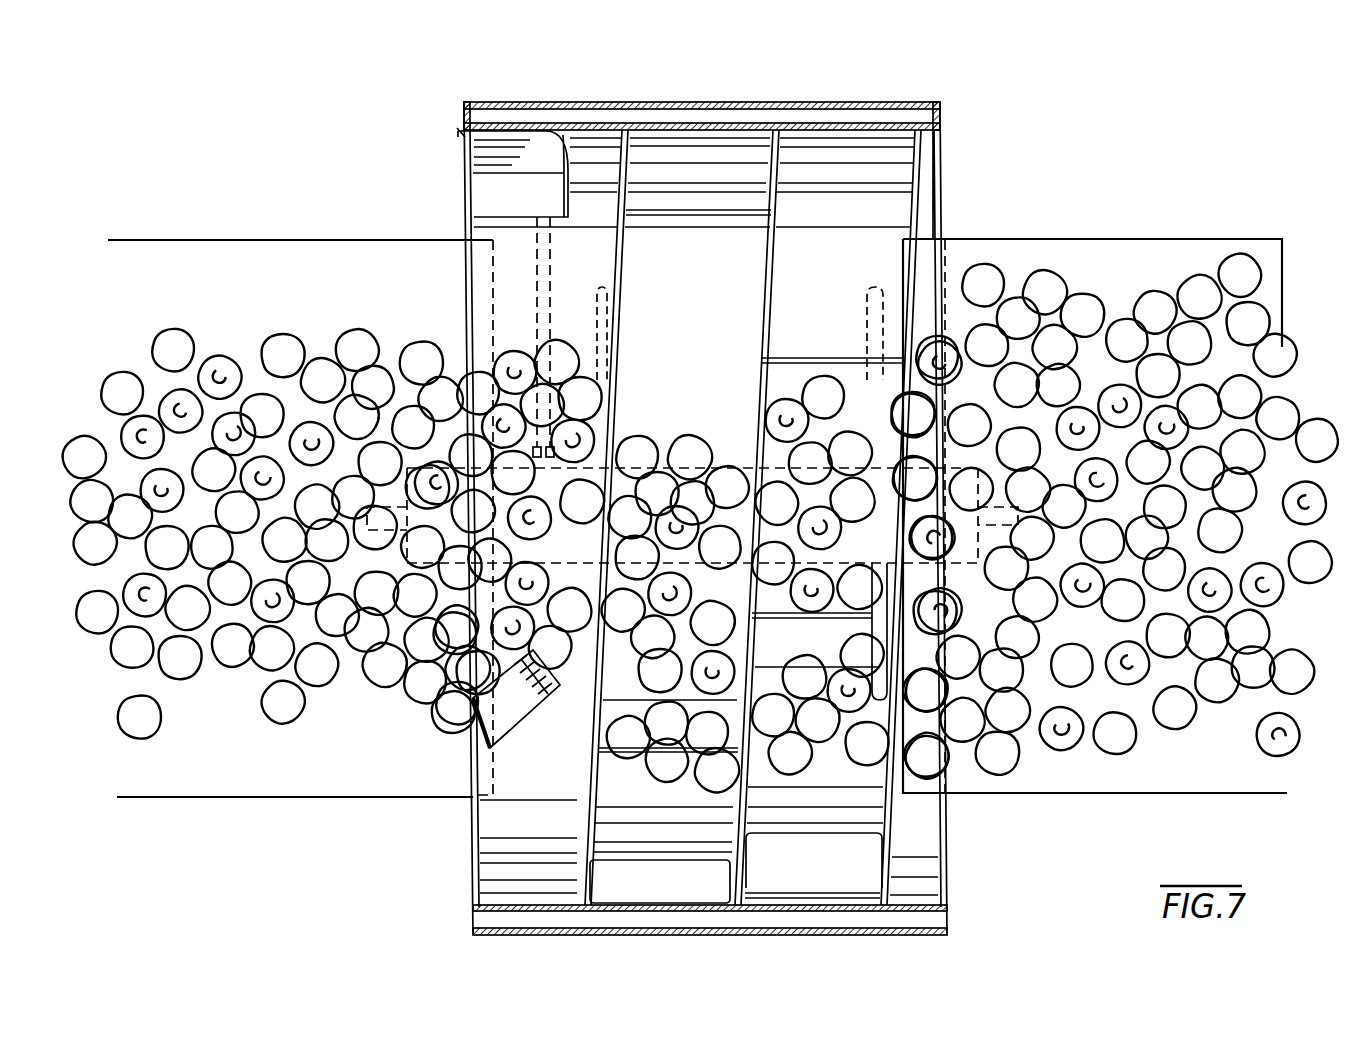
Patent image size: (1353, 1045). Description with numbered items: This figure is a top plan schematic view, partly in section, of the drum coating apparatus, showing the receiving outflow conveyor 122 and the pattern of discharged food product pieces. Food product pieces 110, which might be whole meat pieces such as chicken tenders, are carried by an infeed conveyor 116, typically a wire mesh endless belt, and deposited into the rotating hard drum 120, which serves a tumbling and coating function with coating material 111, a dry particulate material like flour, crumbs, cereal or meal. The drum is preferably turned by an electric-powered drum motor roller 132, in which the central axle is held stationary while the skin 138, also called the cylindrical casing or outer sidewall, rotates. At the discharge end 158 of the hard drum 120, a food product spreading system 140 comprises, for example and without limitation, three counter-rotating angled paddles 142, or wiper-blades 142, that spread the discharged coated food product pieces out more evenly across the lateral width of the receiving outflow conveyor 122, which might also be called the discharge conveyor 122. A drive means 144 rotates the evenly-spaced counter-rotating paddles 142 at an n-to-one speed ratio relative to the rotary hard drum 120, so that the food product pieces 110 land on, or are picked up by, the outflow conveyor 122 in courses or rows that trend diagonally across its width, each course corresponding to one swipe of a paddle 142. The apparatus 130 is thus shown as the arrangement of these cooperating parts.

The food product pieces 110 is at (252, 200).
The coating material 111 is at (222, 375).
The infeed conveyor 116 is at (1153, 240).
The rotating hard drum 120 is at (870, 102).
The receiving outflow conveyor 122 is at (215, 240).
The dispensing apparatus 130 is at (428, 112).
The drum motor roller 132 is at (725, 445).
The skin 138 is at (688, 450).
The food product spreading system 140 is at (470, 174).
The counter-rotating angled paddles 142 is at (468, 151).
The drive means 144 is at (443, 467).
The discharge end 158 is at (466, 272).